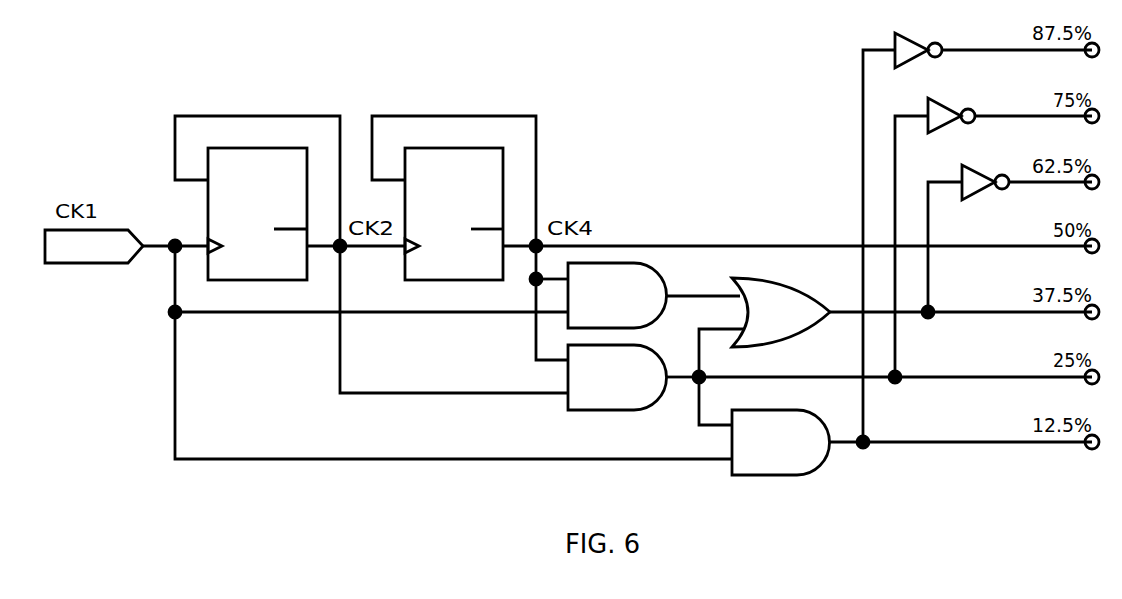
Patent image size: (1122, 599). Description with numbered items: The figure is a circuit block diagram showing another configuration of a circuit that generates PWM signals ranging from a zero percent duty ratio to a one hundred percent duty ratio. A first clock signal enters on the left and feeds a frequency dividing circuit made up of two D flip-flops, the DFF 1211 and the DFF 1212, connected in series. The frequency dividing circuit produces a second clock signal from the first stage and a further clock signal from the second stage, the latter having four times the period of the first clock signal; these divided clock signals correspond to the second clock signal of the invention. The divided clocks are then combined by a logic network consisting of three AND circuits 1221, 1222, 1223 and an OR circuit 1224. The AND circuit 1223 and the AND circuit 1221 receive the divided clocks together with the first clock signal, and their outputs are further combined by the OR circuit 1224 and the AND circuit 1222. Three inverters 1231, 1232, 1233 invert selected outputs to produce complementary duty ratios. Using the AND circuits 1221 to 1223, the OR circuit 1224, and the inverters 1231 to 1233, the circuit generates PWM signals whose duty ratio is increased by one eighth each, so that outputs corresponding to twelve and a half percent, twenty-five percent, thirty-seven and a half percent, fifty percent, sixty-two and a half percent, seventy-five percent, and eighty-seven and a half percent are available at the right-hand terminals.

The DFF 1211 is at (257, 148).
The DFF 1212 is at (454, 148).
The AND circuit 1221 is at (568, 412).
The AND circuit 1222 is at (733, 410).
The AND circuit 1223 is at (568, 329).
The OR circuit 1224 is at (733, 278).
The inverter 1231 is at (905, 68).
The inverter 1232 is at (938, 133).
The inverter 1233 is at (972, 200).